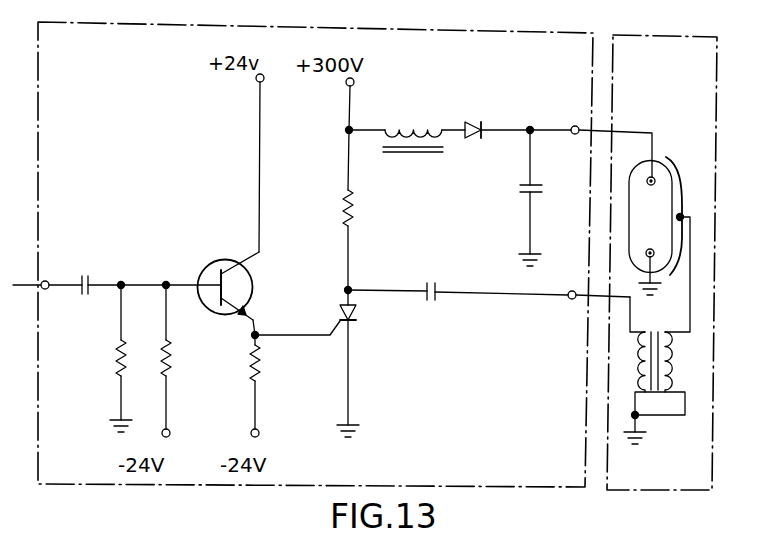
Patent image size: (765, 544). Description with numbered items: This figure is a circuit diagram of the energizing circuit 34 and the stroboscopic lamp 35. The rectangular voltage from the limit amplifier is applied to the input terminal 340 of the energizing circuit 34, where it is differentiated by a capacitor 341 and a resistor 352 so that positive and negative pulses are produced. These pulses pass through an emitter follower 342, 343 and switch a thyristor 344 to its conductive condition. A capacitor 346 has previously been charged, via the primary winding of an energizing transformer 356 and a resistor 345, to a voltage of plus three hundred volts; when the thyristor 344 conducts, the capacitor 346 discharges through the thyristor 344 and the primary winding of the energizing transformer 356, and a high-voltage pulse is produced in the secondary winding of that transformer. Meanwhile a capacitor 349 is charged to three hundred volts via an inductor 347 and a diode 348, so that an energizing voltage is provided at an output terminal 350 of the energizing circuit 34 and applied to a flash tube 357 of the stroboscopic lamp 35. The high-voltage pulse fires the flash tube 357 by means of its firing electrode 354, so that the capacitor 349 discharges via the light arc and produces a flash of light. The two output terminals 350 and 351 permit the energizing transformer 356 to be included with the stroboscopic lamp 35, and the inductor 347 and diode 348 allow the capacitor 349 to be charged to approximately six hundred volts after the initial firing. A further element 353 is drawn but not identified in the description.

The energizing circuit 34 is at (473, 81).
The stroboscopic lamp 35 is at (686, 85).
The input terminal 340 is at (46, 281).
The capacitor 341 is at (92, 279).
The emitter follower 342 is at (214, 290).
The emitter follower 343 is at (259, 368).
The thyristor 344 is at (357, 320).
The resistor 345 is at (353, 199).
The capacitor 346 is at (441, 276).
The inductor 347 is at (447, 104).
The diode 348 is at (491, 109).
The capacitor 349 is at (521, 191).
The output terminal 350 is at (575, 125).
The output terminal 351 is at (577, 276).
The resistor 352 is at (116, 364).
The resistor / secondary winding 353 is at (172, 362).
The firing electrode 354 is at (682, 215).
The energizing transformer 356 is at (654, 418).
The flash tube 357 is at (662, 160).